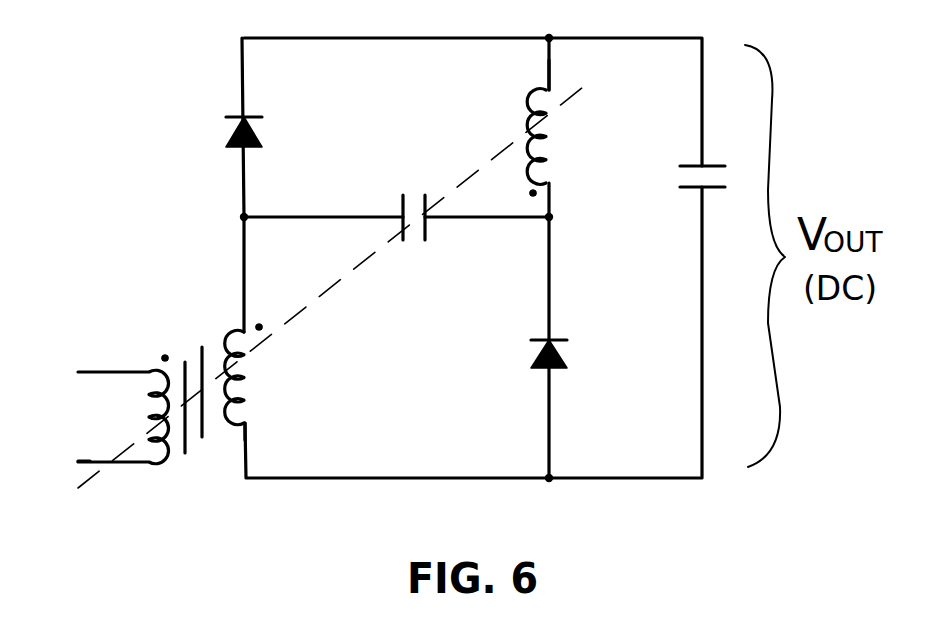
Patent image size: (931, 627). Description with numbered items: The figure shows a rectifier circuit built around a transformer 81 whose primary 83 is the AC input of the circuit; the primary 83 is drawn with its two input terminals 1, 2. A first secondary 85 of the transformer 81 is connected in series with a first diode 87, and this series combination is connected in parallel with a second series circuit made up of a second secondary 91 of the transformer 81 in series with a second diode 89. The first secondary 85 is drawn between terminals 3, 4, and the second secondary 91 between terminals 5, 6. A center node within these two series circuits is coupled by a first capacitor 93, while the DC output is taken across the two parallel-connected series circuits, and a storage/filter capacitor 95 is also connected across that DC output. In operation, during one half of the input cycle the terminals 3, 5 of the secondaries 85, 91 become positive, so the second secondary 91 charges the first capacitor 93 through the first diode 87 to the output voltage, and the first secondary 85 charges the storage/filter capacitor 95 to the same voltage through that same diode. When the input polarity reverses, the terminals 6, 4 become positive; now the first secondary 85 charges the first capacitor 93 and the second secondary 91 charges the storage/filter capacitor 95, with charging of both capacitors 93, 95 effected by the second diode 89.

The transformer 81 is at (213, 307).
The primary 83 is at (132, 371).
The secondary S1 85 is at (243, 412).
The diode D1 87 is at (227, 135).
The diode D2 89 is at (537, 357).
The secondary S2 91 is at (530, 93).
The capacitor C1 93 is at (402, 213).
The storage/filter capacitor C2 95 is at (717, 157).
The primary terminal 1 is at (153, 351).
The primary terminal 2 is at (121, 481).
The terminal 3 is at (242, 314).
The terminal 4 is at (236, 443).
The terminal 5 is at (522, 193).
The terminal 6 is at (531, 72).